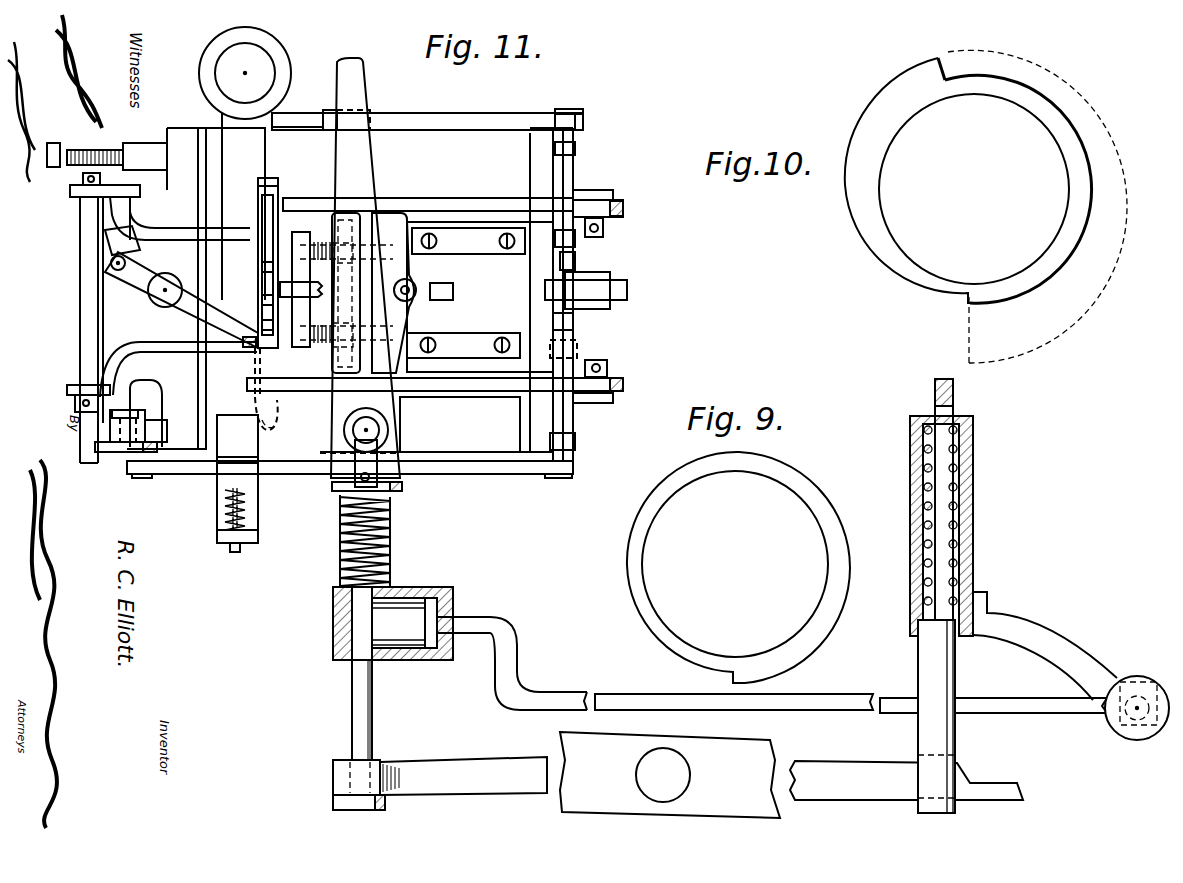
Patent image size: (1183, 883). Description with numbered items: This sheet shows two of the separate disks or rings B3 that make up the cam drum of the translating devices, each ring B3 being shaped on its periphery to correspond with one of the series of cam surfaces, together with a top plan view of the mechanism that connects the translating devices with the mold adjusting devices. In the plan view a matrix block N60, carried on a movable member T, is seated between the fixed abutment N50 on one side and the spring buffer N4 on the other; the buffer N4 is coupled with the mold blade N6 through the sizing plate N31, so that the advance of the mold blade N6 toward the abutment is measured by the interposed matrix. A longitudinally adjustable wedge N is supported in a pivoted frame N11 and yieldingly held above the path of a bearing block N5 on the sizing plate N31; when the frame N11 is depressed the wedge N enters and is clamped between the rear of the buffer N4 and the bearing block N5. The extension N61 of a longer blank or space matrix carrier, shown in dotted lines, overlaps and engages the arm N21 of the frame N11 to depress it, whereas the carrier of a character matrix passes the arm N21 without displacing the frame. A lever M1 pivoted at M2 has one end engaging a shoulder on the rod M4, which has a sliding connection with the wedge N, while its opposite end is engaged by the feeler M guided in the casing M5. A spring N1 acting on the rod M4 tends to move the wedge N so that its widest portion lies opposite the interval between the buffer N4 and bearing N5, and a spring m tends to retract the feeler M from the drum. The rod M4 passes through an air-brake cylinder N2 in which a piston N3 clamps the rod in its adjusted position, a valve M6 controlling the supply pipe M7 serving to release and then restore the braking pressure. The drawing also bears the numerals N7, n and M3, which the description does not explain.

In FIG. 11, the movable member T is at (258, 183).
In FIG. 11, the justifying wedge N is at (383, 410).
In FIG. 11, the spring N1 is at (387, 530).
In FIG. 11, the cylinder N2 is at (380, 588).
In FIG. 11, the piston N3 is at (415, 608).
In FIG. 11, the spring buffer N4 is at (300, 345).
In FIG. 11, the bearing block N5 is at (390, 217).
In FIG. 11, the mold blade N6 is at (268, 427).
In FIG. 11, the cap N7 is at (268, 182).
In FIG. 11, the pivoted frame N11 is at (297, 198).
In FIG. 11, the arm N21 is at (252, 393).
In FIG. 11, the sizing plate N31 is at (480, 297).
In FIG. 11, the fixed abutment N50 is at (235, 233).
In FIG. 11, the matrix block N60 is at (270, 216).
In FIG. 11, the extension of space matrix carrier N61 is at (265, 425).
In FIG. 11, the shaft n is at (613, 378).
In FIG. 9, the feeler M is at (953, 393).
In FIG. 9, the lever M1 is at (807, 770).
In FIG. 9, the pivot M2 is at (670, 775).
In FIG. 11, the wedge plate M3 is at (377, 770).
In FIG. 11, the rod M4 is at (365, 703).
In FIG. 9, the casing M5 is at (973, 433).
In FIG. 9, the valve M6 is at (1130, 715).
In FIG. 9, the supply pipe M7 is at (827, 697).
In FIG. 9, the spring m is at (962, 503).
In FIG. 9, the disk B3 is at (808, 490).
In FIG. 10, the disk B3 is at (900, 83).